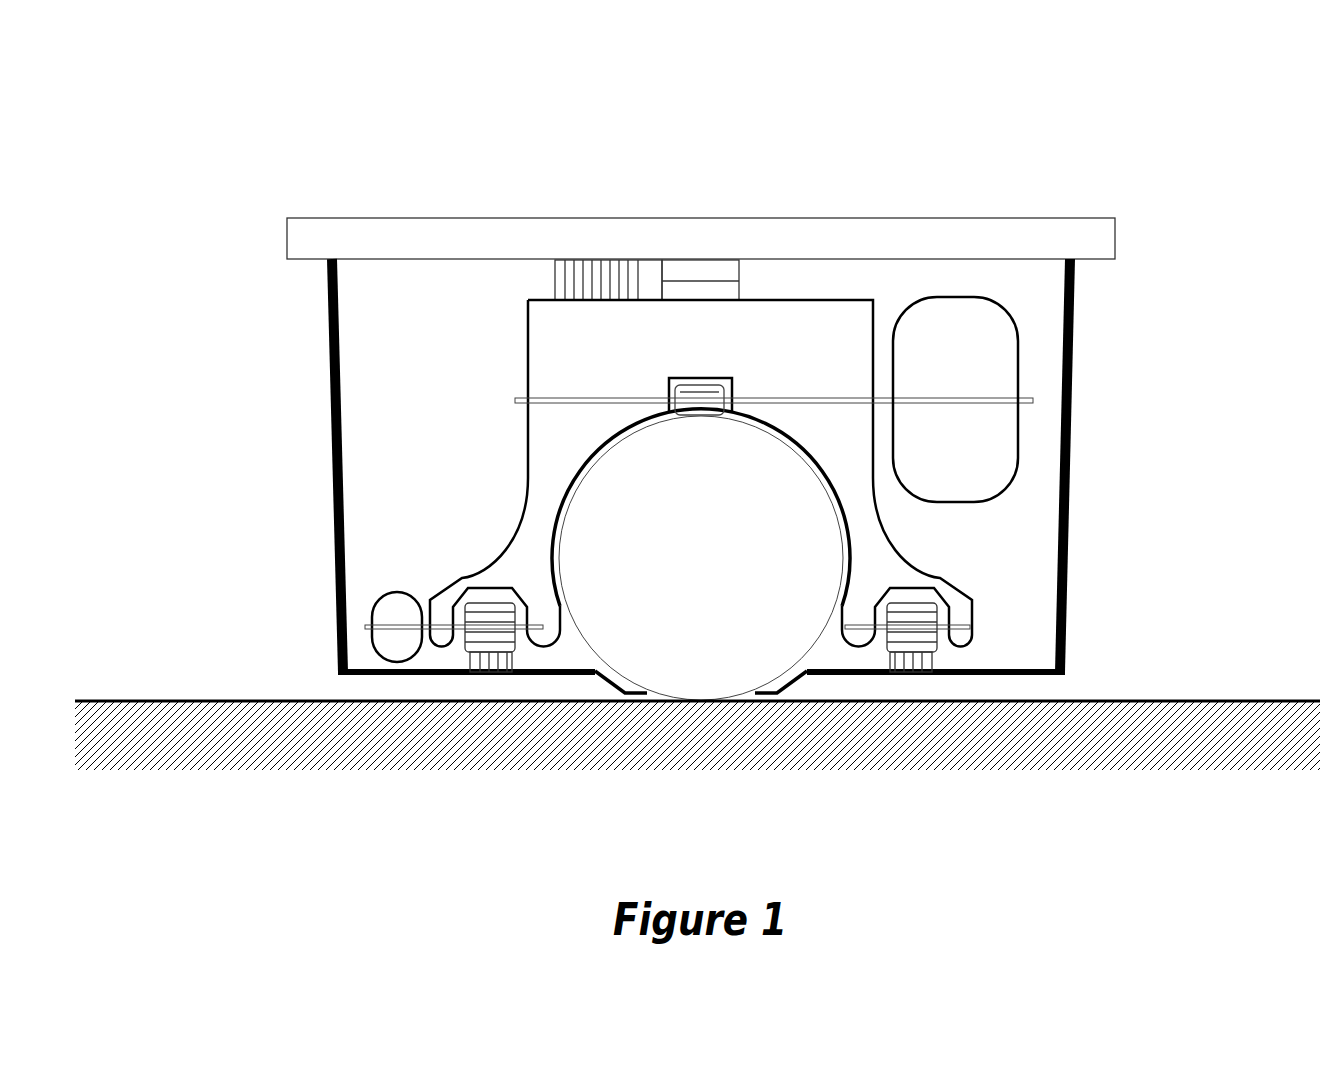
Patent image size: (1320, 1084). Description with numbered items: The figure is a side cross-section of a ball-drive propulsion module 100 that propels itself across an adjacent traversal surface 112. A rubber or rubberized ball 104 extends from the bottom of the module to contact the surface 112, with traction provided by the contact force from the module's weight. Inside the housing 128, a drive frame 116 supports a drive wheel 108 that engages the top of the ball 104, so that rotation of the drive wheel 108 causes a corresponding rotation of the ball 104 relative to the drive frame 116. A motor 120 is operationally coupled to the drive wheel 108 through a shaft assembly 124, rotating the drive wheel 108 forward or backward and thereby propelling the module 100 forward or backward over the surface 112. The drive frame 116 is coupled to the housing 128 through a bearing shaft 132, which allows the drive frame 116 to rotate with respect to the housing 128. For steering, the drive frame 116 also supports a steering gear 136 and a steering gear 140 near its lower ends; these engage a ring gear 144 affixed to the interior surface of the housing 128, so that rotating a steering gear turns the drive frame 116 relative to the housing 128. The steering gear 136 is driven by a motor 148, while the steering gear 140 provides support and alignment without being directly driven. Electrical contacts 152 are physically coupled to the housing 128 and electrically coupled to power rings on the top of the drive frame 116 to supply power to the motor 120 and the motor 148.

The ball-drive propulsion module 100 is at (474, 97).
The ball 104 is at (552, 481).
The drive wheel 108 is at (750, 395).
The traversal surface 112 is at (661, 714).
The drive frame 116 is at (910, 553).
The motor 120 is at (1040, 452).
The shaft assembly 124 is at (1058, 392).
The housing 128 is at (316, 546).
The bearing shaft 132 is at (763, 276).
The steering gear 136 is at (448, 588).
The steering gear 140 is at (960, 610).
The ring gear 144 is at (959, 661).
The motor 148 is at (350, 607).
The electrical contacts 152 is at (547, 272).